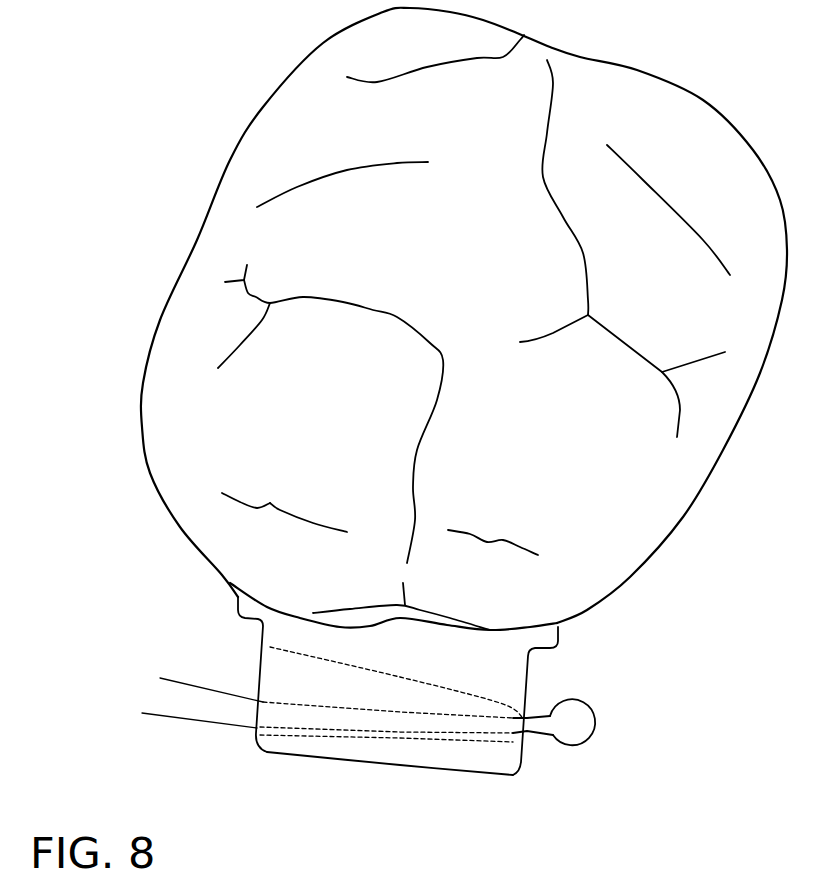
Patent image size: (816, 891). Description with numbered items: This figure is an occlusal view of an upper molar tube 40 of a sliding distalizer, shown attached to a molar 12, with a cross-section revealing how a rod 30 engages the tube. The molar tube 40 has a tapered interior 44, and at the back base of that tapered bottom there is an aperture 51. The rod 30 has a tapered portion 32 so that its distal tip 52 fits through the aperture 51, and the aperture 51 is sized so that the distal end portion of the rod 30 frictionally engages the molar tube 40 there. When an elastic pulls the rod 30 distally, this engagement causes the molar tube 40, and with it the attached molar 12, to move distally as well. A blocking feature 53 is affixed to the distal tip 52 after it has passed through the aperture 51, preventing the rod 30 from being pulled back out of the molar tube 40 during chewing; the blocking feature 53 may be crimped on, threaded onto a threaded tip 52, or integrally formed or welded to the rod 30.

The molar 12 is at (543, 497).
The rod 30 is at (157, 702).
The tapered portion 32 is at (373, 725).
The molar tube 40 is at (518, 668).
The interior 44 is at (372, 695).
The aperture 51 is at (527, 718).
The distal tip 52 is at (538, 725).
The blocking feature 53 is at (565, 723).